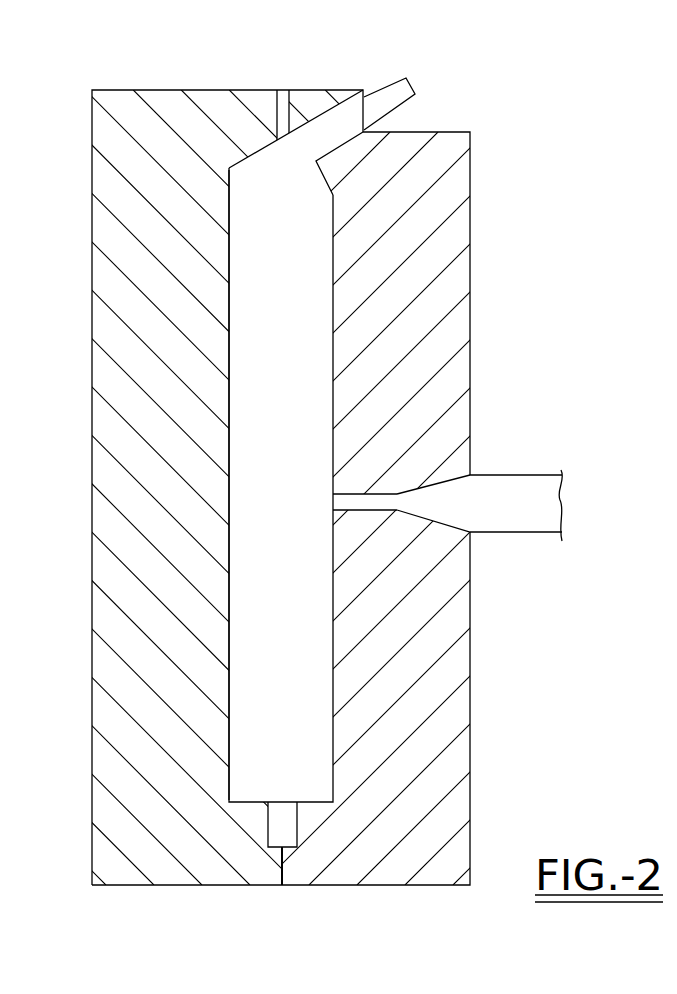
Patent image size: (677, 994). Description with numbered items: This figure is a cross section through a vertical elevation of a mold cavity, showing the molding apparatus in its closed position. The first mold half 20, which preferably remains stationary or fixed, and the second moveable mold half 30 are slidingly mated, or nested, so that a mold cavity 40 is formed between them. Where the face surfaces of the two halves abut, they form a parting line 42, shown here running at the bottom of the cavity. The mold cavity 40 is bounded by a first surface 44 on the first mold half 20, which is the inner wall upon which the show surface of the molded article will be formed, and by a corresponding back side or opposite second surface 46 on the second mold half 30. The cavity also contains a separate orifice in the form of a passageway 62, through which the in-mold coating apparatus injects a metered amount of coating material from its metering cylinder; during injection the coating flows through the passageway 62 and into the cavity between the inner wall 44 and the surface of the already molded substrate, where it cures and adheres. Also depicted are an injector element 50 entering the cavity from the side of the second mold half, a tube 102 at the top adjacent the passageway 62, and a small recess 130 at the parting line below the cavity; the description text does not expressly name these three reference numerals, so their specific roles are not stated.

The first mold half 20 is at (474, 357).
The second moveable mold half 30 is at (90, 336).
The mold cavity 40 is at (244, 599).
The parting line 42 is at (276, 872).
The first surface 44 is at (233, 403).
The second surface 46 is at (331, 443).
The injection nozzle / tube 50 is at (524, 472).
The passageway 62 is at (282, 98).
The inlet tube 102 is at (382, 92).
The gate recess 130 is at (292, 830).